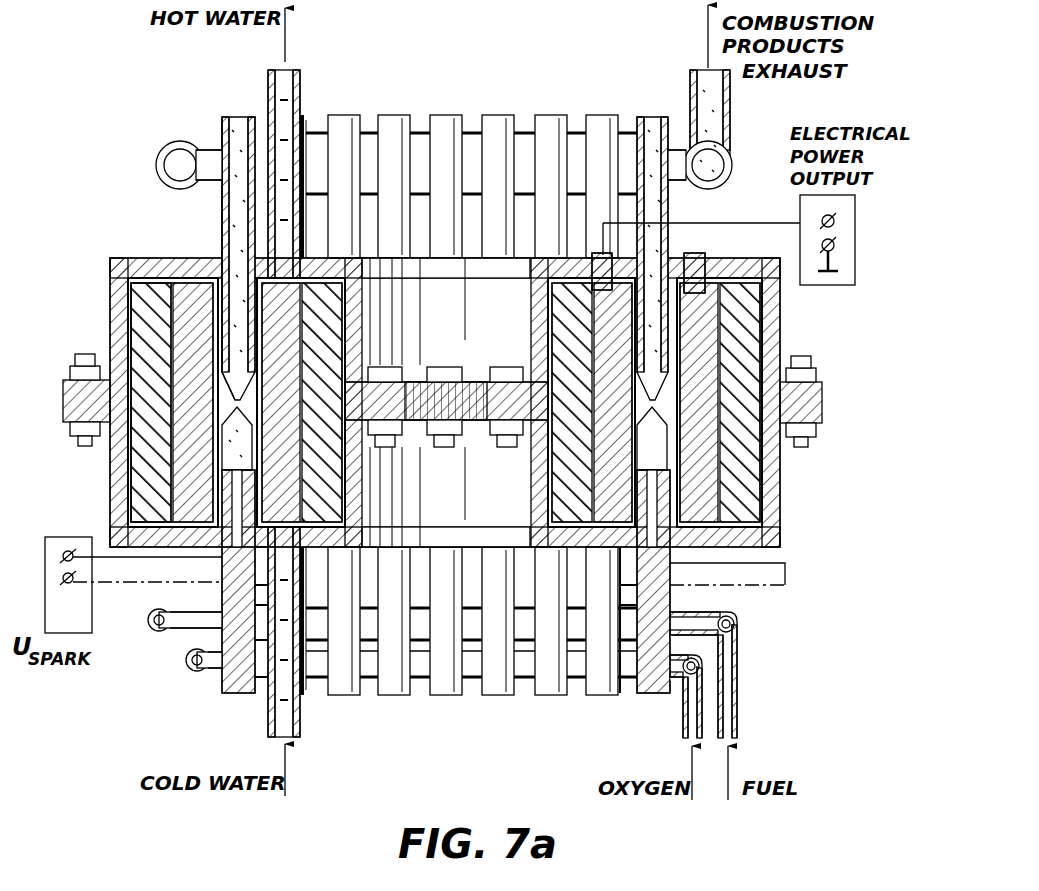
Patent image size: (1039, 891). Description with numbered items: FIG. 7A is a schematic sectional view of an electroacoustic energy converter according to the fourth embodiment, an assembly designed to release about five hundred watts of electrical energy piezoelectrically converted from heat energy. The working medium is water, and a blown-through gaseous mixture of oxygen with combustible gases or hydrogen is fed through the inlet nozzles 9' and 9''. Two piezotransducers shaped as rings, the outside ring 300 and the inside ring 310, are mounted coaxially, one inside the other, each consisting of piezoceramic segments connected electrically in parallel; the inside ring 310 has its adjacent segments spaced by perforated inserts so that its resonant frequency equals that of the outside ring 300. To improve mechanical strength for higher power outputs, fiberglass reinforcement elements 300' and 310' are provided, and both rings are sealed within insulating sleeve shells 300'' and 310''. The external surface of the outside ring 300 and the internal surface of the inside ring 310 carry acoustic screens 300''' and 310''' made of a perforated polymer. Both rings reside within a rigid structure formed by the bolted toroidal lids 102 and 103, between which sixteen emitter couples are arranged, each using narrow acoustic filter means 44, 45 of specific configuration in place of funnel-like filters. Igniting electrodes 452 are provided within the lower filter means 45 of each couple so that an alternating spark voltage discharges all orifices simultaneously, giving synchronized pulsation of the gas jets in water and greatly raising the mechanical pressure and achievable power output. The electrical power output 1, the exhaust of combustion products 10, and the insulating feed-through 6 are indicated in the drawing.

The electrical power output terminals 1 is at (855, 232).
The electrical insulator feed-through 6 is at (700, 255).
The inlet nozzle 9' is at (726, 679).
The inlet nozzle 9'' is at (675, 701).
The combustion products exhaust pipe 10 is at (690, 88).
The acoustic filter means 44 is at (222, 244).
The acoustic filter means 45 is at (222, 592).
The toroidal lid 102 is at (768, 312).
The toroidal lid 103 is at (768, 468).
The outside piezotransducer ring 300 is at (758, 402).
The fiberglass reinforcement element 300' is at (136, 402).
The insulating sleeve shell 300'' is at (192, 402).
The acoustic screen 300''' is at (108, 402).
The inside piezotransducer ring 310 is at (558, 402).
The fiberglass reinforcement element 310' is at (434, 369).
The insulating sleeve shell 310'' is at (348, 402).
The acoustic screen 310''' is at (426, 451).
The igniting electrodes 452 is at (785, 570).